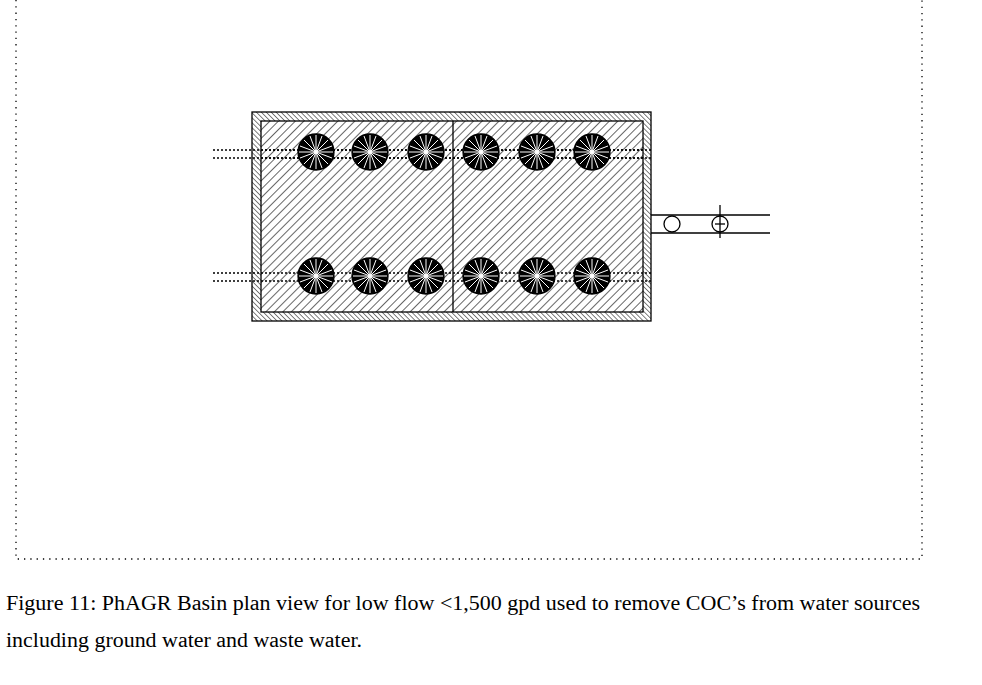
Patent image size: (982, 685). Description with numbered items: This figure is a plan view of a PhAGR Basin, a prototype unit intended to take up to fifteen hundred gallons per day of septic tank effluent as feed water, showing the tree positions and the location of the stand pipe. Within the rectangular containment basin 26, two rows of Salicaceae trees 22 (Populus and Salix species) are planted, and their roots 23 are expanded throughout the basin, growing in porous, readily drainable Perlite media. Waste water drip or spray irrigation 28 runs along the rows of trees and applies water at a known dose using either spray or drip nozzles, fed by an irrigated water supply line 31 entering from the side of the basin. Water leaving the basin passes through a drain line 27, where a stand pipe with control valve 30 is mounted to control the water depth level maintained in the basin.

The Salicaceae trees 22 is at (335, 167).
The roots expanded throughout the basin 23 is at (351, 230).
The containment basin 26 is at (451, 250).
The drain line 27 is at (721, 258).
The waste water drip or spray irrigation 28 is at (452, 94).
The stand pipe with control valve 30 is at (790, 174).
The irrigated water supply line 31 is at (354, 208).